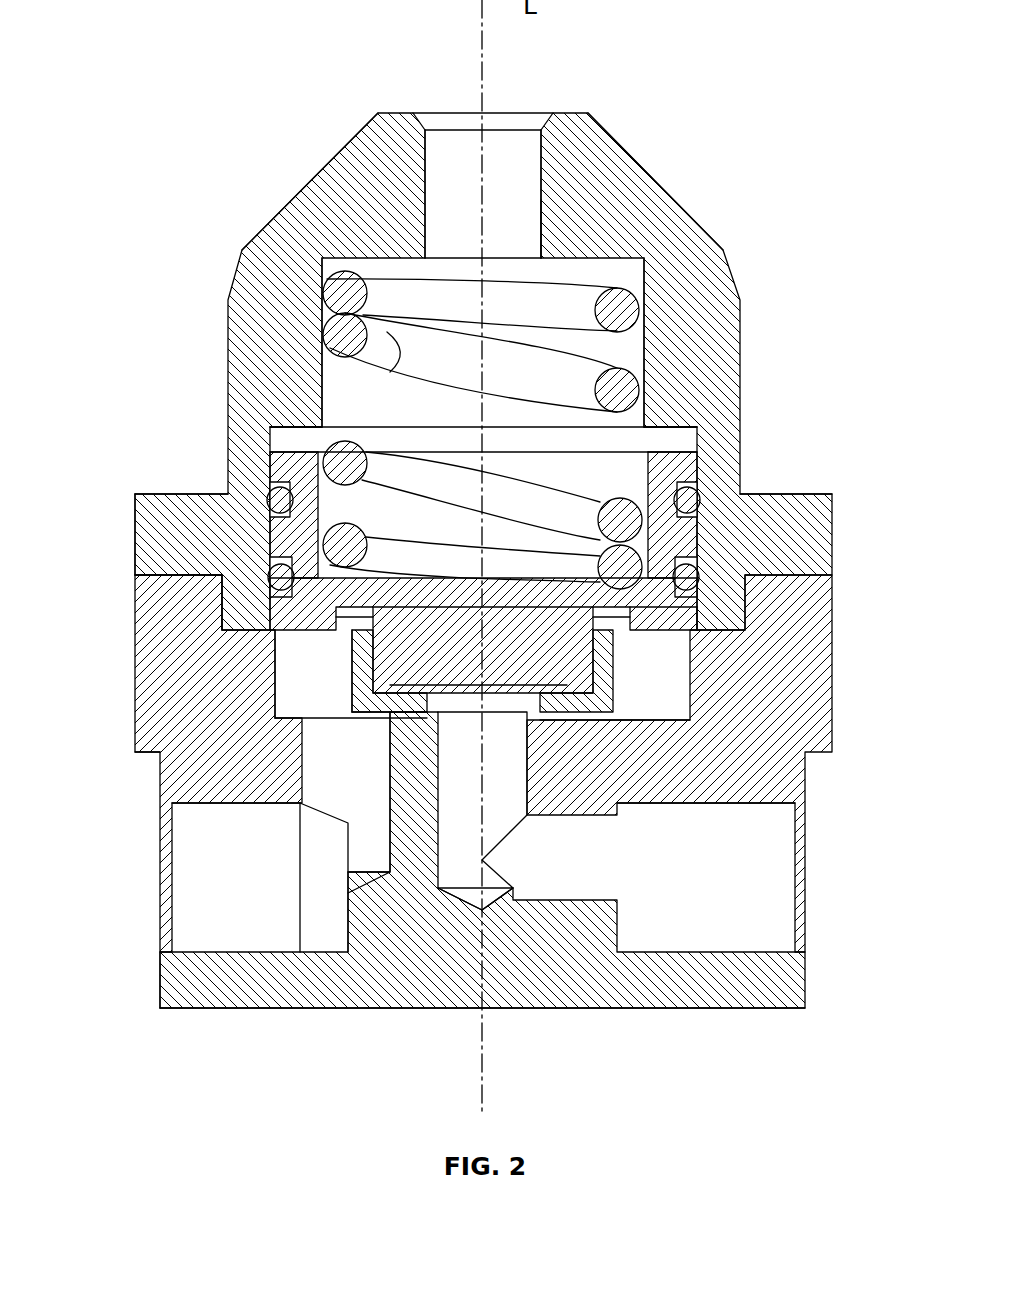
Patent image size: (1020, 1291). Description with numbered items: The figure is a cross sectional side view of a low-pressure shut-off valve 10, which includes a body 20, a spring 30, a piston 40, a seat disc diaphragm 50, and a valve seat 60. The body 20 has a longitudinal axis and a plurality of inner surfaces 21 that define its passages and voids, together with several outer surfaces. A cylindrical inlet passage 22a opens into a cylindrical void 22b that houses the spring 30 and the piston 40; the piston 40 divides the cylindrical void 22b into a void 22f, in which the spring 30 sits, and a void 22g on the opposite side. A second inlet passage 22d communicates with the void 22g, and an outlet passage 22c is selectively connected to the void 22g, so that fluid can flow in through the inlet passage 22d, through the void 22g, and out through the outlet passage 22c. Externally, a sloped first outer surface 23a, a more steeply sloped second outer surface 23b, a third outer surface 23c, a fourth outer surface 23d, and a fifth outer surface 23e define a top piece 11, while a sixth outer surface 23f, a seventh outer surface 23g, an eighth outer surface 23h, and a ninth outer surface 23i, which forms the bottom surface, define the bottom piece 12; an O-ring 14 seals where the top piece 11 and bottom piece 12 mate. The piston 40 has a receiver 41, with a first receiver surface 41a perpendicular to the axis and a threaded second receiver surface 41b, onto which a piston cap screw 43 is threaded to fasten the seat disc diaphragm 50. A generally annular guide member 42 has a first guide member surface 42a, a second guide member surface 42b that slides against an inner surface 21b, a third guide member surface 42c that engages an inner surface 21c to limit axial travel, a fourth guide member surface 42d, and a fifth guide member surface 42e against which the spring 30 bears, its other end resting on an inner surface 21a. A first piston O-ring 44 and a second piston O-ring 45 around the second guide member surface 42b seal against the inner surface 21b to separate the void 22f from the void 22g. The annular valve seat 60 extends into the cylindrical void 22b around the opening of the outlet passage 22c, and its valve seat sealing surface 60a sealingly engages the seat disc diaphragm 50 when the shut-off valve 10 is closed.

The low-pressure shut-off valve 10 is at (104, 96).
The top piece 11 is at (745, 305).
The bottom piece 12 is at (772, 1009).
The O-ring 14 is at (220, 623).
The body 20 is at (30, 598).
The inner surfaces 21 is at (540, 190).
The inner surface 21a is at (553, 257).
The inner surface 21b is at (700, 437).
The inner surface 21c is at (272, 430).
The inlet passage 22a is at (458, 193).
The cylindrical void 22b is at (363, 420).
The outlet passage 22c is at (705, 917).
The inlet passage 22d is at (212, 937).
The void 22f is at (420, 416).
The void 22g is at (338, 702).
The first outer surface 23a is at (312, 182).
The second outer surface 23b is at (735, 262).
The third outer surface 23c is at (750, 492).
The fourth outer surface 23d is at (165, 493).
The fifth outer surface 23e is at (134, 505).
The sixth outer surface 23f is at (135, 578).
The seventh outer surface 23g is at (160, 753).
The eighth outer surface 23h is at (160, 1008).
The ninth outer surface 23i is at (318, 1008).
The spring 30 is at (345, 330).
The piston 40 is at (688, 472).
The receiver 41 is at (692, 657).
The first receiver surface 41a is at (390, 716).
The second receiver surface 41b is at (352, 645).
The guide member 42 is at (275, 532).
The first guide member surface 42a is at (668, 607).
The second guide member surface 42b is at (692, 545).
The third guide member surface 42c is at (290, 447).
The fourth guide member surface 42d is at (660, 440).
The fifth guide member surface 42e is at (522, 578).
The piston cap screw 43 is at (568, 653).
The first piston O-ring 44 is at (692, 504).
The second piston O-ring 45 is at (692, 617).
The seat disc diaphragm 50 is at (470, 715).
The valve seat 60 is at (300, 803).
The valve seat sealing surface 60a is at (513, 718).